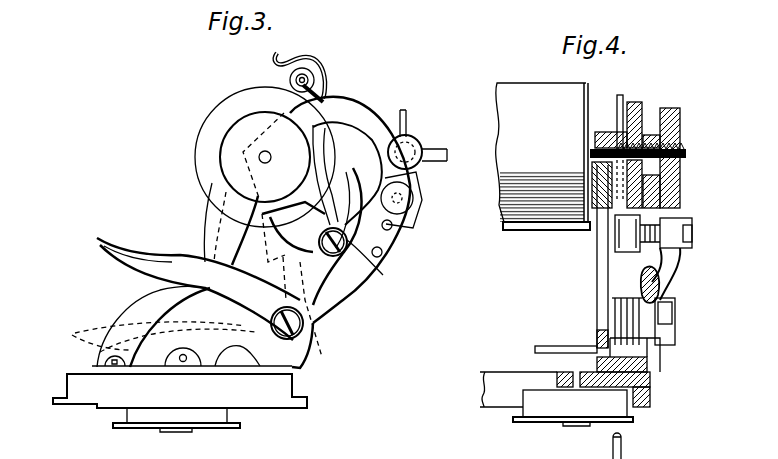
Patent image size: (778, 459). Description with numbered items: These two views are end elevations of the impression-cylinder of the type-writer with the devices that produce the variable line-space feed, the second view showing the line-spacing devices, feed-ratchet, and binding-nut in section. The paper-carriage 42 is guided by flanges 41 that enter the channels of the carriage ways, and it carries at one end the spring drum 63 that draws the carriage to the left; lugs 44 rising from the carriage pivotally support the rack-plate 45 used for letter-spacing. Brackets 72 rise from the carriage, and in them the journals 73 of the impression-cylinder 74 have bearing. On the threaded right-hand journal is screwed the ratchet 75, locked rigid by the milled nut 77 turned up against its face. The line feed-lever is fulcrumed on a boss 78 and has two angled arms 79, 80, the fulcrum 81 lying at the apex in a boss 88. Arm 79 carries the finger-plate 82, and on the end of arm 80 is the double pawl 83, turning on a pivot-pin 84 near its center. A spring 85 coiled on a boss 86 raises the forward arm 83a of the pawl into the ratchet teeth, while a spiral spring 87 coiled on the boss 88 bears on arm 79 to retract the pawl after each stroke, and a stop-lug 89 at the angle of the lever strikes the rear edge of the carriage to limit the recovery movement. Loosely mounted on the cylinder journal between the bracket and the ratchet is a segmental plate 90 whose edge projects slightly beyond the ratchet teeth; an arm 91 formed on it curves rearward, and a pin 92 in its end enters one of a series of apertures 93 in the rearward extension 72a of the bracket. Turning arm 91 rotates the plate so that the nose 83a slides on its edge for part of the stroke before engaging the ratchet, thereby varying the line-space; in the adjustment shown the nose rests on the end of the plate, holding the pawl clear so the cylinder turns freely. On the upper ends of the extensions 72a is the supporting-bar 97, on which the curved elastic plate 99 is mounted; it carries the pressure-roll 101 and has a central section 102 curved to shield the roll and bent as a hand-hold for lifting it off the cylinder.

In FIG. 3, the flanges 41 is at (53, 400).
In FIG. 3, the carriage 42 is at (180, 387).
In FIG. 4, the carriage 42 is at (652, 385).
In FIG. 3, the lugs 44 is at (184, 352).
In FIG. 4, the lugs 44 is at (598, 336).
In FIG. 4, the rack-plate 45 is at (566, 342).
In FIG. 3, the drum 63 is at (176, 427).
In FIG. 4, the drum 63 is at (538, 418).
In FIG. 3, the arms or brackets 72 is at (231, 224).
In FIG. 4, the arms or brackets 72 is at (597, 286).
In FIG. 3, the rearward extension of the bracket-frame 72a is at (403, 238).
In FIG. 3, the journals 73 is at (271, 158).
In FIG. 4, the journals 73 is at (688, 153).
In FIG. 3, the impression-cylinder 74 is at (265, 156).
In FIG. 4, the impression-cylinder 74 is at (545, 163).
In FIG. 3, the ratchet 75 is at (227, 174).
In FIG. 4, the ratchet 75 is at (658, 100).
In FIG. 3, the milled nut 77 is at (263, 155).
In FIG. 4, the milled nut 77 is at (680, 128).
In FIG. 3, the boss 78 is at (182, 356).
In FIG. 3, the arm of line feed-lever 79 is at (186, 302).
In FIG. 3, the arm of line feed-lever 80 is at (330, 262).
In FIG. 4, the arm of line feed-lever 80 is at (660, 282).
In FIG. 3, the fulcrum 81 is at (303, 322).
In FIG. 4, the fulcrum 81 is at (677, 323).
In FIG. 3, the finger-plate 82 is at (138, 245).
In FIG. 3, the double pawl 83 is at (342, 240).
In FIG. 3, the forward arm of the pawl 83a is at (285, 251).
In FIG. 4, the forward arm of the pawl 83a is at (622, 240).
In FIG. 3, the pivot-pin 84 is at (372, 265).
In FIG. 4, the spring 85 is at (658, 260).
In FIG. 4, the boss 86 is at (694, 240).
In FIG. 4, the spiral spring 87 is at (627, 311).
In FIG. 4, the boss 88 is at (660, 346).
In FIG. 3, the stop-lug 89 is at (302, 370).
In FIG. 4, the stop-lug 89 is at (662, 362).
In FIG. 3, the segmental plate 90 is at (327, 156).
In FIG. 4, the segmental plate 90 is at (617, 114).
In FIG. 3, the arm 91 is at (350, 210).
In FIG. 3, the pin 92 is at (407, 198).
In FIG. 3, the apertures 93 is at (383, 254).
In FIG. 3, the supporting-bar 97 is at (410, 147).
In FIG. 3, the roll-carrier plate 99 is at (326, 102).
In FIG. 3, the roll 101 is at (290, 80).
In FIG. 3, the central section 102 is at (303, 69).